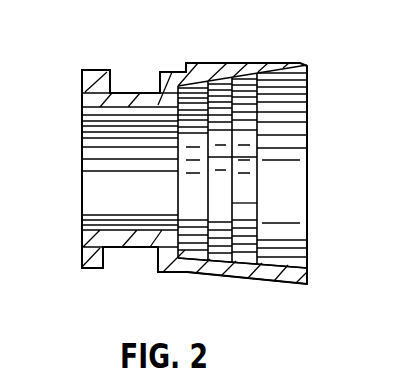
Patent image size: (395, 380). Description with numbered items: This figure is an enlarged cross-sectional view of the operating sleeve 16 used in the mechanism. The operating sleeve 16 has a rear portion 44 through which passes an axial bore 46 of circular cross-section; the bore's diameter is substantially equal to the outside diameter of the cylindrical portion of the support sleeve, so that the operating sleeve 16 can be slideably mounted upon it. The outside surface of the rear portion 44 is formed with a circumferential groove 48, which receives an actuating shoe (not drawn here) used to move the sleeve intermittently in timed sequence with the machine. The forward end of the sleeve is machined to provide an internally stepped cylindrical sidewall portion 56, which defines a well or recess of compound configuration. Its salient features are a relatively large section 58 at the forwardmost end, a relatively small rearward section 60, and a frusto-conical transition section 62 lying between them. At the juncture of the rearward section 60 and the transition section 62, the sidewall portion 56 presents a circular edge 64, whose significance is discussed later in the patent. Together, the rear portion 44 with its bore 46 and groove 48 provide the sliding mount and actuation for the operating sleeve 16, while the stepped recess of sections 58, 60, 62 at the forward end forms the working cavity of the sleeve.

The operating sleeve 16 is at (326, 115).
The rear portion 44 is at (172, 72).
The axial bore 46 is at (82, 215).
The circumferential groove 48 is at (113, 256).
The internally stepped cylindrical sidewall portion 56 is at (222, 70).
The relatively large section 58 is at (308, 260).
The relatively small rearward section 60 is at (188, 280).
The frusto-conical transition section 62 is at (248, 284).
The circular edge 64 is at (266, 194).